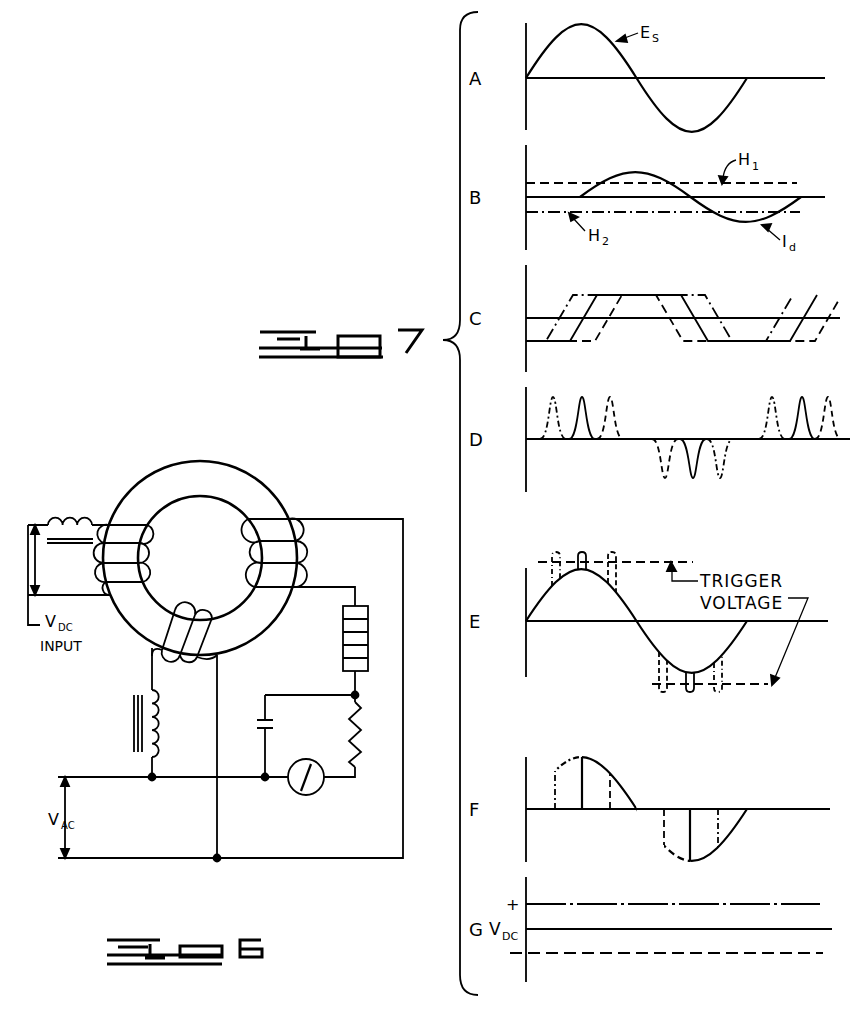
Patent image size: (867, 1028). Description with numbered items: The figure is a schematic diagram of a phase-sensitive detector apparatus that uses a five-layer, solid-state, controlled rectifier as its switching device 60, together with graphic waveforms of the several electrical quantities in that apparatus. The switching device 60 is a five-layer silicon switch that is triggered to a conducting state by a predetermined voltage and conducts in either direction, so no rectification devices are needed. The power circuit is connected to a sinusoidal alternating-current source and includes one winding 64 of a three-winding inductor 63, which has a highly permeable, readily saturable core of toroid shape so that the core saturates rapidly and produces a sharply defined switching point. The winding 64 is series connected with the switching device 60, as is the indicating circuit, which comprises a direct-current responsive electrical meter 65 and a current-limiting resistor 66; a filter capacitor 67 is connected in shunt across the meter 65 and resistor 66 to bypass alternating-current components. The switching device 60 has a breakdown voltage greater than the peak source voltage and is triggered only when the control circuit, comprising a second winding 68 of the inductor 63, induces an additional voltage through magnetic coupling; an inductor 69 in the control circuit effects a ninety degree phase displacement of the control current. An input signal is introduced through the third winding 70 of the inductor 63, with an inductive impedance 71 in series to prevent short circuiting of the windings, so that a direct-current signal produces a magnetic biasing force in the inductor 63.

The switching device 60 is at (343, 636).
The three-winding inductor 63 is at (250, 470).
The winding 64 is at (258, 542).
The direct-current responsive electrical meter 65 is at (315, 791).
The current-limiting resistor 66 is at (361, 730).
The filter capacitor 67 is at (272, 719).
The second winding 68 is at (178, 610).
The inductor 69 is at (158, 716).
The third winding 70 is at (143, 545).
The inductive impedance 71 is at (77, 516).